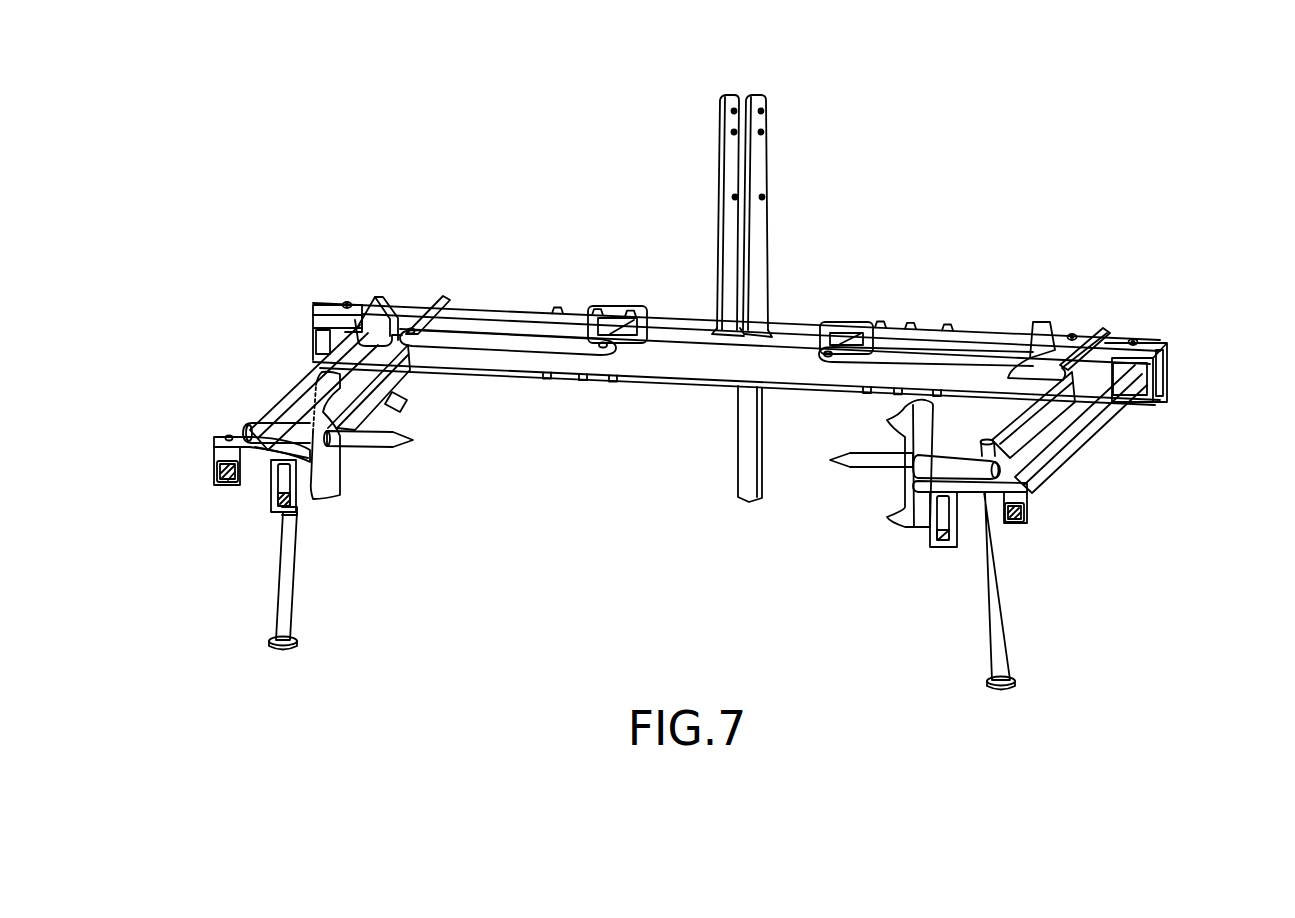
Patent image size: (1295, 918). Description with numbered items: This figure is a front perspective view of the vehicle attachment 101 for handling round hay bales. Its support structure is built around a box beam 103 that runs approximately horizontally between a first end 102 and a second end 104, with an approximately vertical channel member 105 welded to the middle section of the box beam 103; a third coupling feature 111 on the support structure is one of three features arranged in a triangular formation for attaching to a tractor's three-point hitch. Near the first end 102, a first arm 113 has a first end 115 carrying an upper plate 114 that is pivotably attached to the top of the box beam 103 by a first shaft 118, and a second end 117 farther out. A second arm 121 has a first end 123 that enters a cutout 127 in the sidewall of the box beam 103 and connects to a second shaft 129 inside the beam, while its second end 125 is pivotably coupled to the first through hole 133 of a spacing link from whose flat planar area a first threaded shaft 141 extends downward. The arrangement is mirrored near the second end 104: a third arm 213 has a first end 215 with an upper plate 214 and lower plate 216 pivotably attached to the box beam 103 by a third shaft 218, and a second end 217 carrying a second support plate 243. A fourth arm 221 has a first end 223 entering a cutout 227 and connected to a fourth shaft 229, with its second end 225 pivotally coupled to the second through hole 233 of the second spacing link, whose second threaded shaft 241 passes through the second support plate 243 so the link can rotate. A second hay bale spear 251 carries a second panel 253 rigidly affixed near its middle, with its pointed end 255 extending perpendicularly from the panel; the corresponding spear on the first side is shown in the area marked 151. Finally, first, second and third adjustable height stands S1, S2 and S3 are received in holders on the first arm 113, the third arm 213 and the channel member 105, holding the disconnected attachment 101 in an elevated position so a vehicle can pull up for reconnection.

The vehicle attachment 101 is at (1036, 106).
The first end 102 is at (1170, 361).
The box beam 103 is at (698, 362).
The second end 104 is at (318, 304).
The channel member 105 is at (760, 254).
The third coupling feature 111 is at (800, 182).
The first arm 113 is at (1022, 437).
The upper plate 114 is at (1056, 340).
The first end 115 is at (1076, 382).
The second end 117 is at (942, 548).
The first shaft 118 is at (1072, 333).
The second arm 121 is at (1095, 433).
The first end 123 is at (1130, 372).
The second end 125 is at (1026, 513).
The cutout 127 is at (1158, 380).
The second shaft 129 is at (1138, 337).
The first through hole 133 is at (1022, 477).
The first threaded shaft 141 is at (946, 514).
The second clamp assembly 151 is at (834, 508).
The third arm 213 is at (397, 398).
The upper plate 214 is at (388, 318).
The first end 215 is at (415, 357).
The lower plate 216 is at (432, 380).
The second end 217 is at (272, 500).
The third shaft 218 is at (407, 330).
The fourth arm 221 is at (292, 385).
The first end 223 is at (332, 336).
The second end 225 is at (215, 481).
The cutout 227 is at (345, 326).
The fourth shaft 229 is at (347, 302).
The second through hole 233 is at (230, 438).
The second threaded shaft 241 is at (298, 492).
The second support plate 243 is at (258, 462).
The second hay bale spear 251 is at (446, 528).
The second panel 253 is at (330, 469).
The pointed end 255 is at (408, 440).
The first adjustable height stand S1 is at (1002, 647).
The second adjustable height stand S2 is at (292, 619).
The third adjustable height stand S3 is at (758, 433).